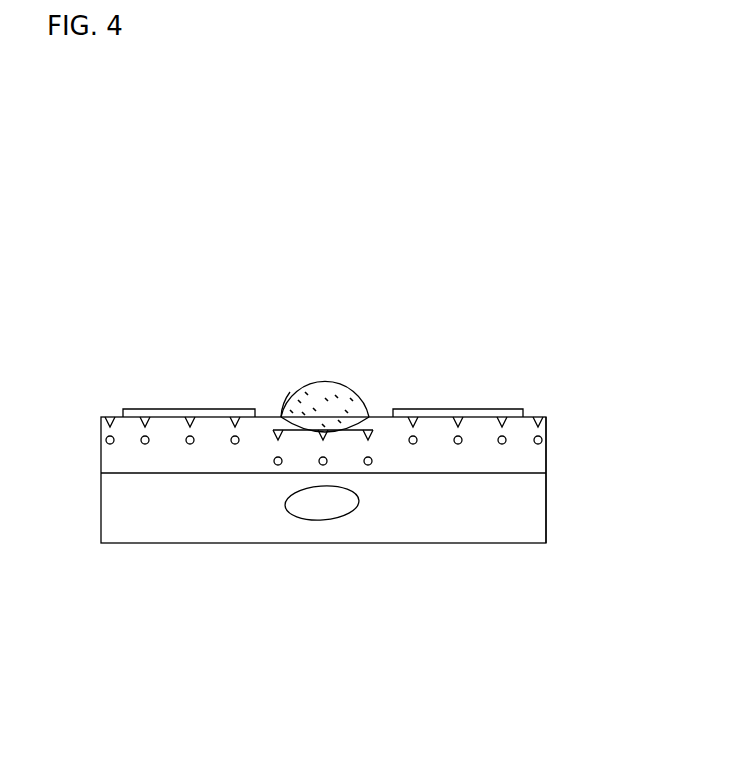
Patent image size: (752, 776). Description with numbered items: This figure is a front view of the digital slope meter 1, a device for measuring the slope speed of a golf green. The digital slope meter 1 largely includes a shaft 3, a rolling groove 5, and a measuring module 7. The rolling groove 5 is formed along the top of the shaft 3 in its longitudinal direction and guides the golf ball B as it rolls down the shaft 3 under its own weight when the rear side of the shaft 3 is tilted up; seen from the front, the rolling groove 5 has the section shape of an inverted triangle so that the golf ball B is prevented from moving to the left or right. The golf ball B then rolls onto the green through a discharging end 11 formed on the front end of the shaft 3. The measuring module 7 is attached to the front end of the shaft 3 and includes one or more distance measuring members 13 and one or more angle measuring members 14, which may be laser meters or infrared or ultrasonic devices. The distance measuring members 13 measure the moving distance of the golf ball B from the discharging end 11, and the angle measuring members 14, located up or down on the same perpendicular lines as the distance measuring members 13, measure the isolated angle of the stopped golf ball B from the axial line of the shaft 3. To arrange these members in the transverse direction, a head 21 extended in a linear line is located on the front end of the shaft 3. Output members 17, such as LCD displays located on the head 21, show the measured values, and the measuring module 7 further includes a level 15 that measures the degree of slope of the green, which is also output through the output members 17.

The digital slope meter 1 is at (473, 214).
The shaft 3 is at (323, 532).
The rolling groove 5 is at (340, 425).
The measuring module 7 is at (553, 383).
The discharging end 11 is at (320, 430).
The distance measuring member 13 is at (450, 430).
The angle measuring member 14 is at (502, 444).
The level 15 is at (307, 500).
The output member 17 is at (173, 408).
The head 21 is at (546, 455).
The golf ball B is at (297, 388).